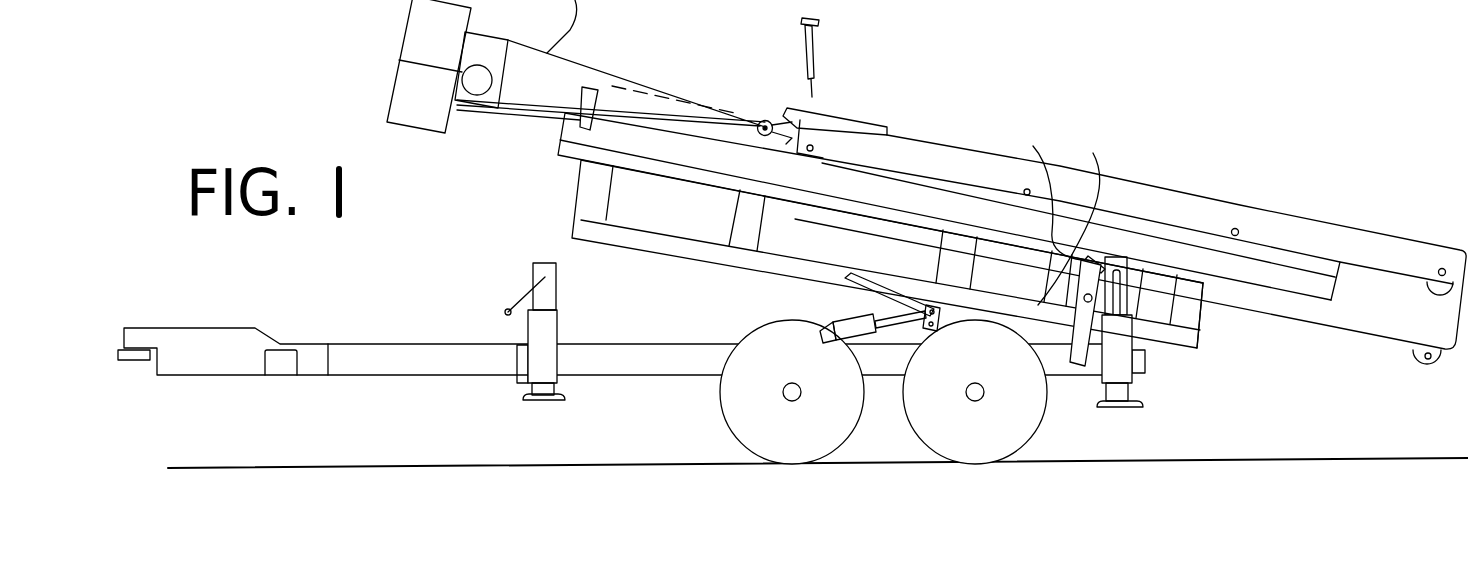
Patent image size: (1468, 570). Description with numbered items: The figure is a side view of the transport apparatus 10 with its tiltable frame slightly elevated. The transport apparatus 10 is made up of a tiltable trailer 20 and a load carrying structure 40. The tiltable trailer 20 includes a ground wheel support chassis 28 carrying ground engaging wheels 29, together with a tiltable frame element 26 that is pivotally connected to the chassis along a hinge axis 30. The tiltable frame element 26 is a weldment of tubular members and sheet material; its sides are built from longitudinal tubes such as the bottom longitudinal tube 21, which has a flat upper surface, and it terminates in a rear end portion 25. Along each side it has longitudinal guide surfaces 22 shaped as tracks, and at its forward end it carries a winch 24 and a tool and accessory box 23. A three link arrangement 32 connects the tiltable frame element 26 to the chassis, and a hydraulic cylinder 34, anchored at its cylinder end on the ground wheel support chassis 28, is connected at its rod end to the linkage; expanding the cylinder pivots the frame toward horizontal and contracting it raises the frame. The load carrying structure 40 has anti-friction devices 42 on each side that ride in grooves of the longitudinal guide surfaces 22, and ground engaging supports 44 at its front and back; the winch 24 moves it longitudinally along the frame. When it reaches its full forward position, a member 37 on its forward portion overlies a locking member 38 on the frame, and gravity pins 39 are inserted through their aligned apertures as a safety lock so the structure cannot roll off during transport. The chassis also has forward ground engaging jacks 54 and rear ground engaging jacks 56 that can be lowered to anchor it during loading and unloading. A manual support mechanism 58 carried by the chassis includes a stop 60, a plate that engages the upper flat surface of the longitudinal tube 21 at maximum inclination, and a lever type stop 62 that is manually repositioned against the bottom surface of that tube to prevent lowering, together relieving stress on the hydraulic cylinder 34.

The transport apparatus 10 is at (270, 108).
The tiltable trailer 20 is at (508, 250).
The bottom longitudinal tube 21 is at (773, 263).
The longitudinal guide surfaces 22 is at (683, 127).
The tool and accessory box 23 is at (405, 88).
The winch 24 is at (488, 44).
The rear end portion 25 is at (1197, 348).
The tiltable frame element 26 is at (563, 195).
The ground wheel support chassis 28 is at (406, 334).
The ground engaging wheels 29 is at (748, 423).
The hinge axis 30 is at (1148, 352).
The three link arrangement 32 is at (900, 308).
The hydraulic cylinder 34 is at (860, 322).
The member 37 is at (787, 113).
The locking member 38 is at (583, 98).
The gravity pins 39 is at (808, 56).
The load carrying structure 40 is at (1289, 207).
The anti-friction devices 42 is at (1430, 285).
The ground engaging supports 44 is at (1417, 362).
The forward ground engaging jacks 54 is at (560, 332).
The rear ground engaging jacks 56 is at (1120, 374).
The manual support mechanism 58 is at (1059, 198).
The stop 60 is at (1069, 247).
The lever type stop 62 is at (1084, 297).